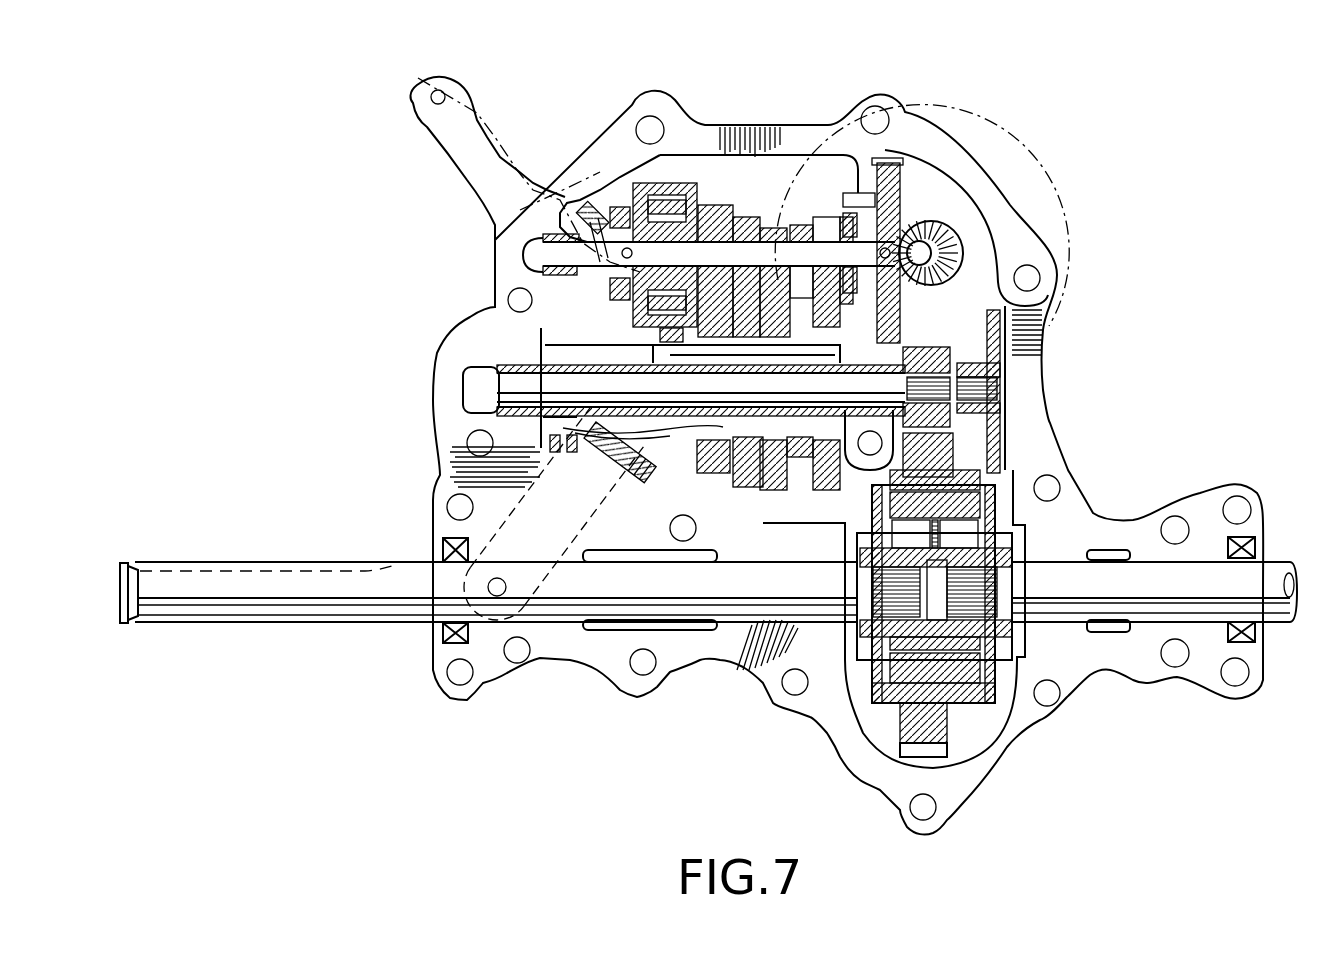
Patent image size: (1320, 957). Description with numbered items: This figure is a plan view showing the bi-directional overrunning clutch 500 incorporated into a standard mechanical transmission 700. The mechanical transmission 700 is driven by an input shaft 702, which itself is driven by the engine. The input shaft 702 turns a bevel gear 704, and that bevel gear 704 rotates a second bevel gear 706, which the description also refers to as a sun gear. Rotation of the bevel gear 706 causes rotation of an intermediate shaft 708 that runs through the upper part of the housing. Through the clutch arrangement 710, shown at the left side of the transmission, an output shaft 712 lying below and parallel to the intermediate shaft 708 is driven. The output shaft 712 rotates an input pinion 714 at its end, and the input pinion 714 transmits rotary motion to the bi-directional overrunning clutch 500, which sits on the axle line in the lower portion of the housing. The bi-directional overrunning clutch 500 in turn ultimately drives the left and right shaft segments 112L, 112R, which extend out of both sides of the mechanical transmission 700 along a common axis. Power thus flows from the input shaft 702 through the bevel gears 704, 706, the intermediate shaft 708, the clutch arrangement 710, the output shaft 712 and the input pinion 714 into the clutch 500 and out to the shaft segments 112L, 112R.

The mechanical transmission 700 is at (1082, 323).
The input shaft 702 is at (963, 230).
The bevel gear 704 is at (930, 250).
The bevel gear 706 is at (900, 230).
The intermediate shaft 708 is at (737, 250).
The clutch arrangement 710 is at (585, 320).
The output shaft 712 is at (513, 390).
The input pinion 714 is at (963, 380).
The bi-directional overrunning clutch 500 is at (868, 737).
The left shaft segment 112L is at (667, 593).
The right shaft segment 112R is at (1150, 590).